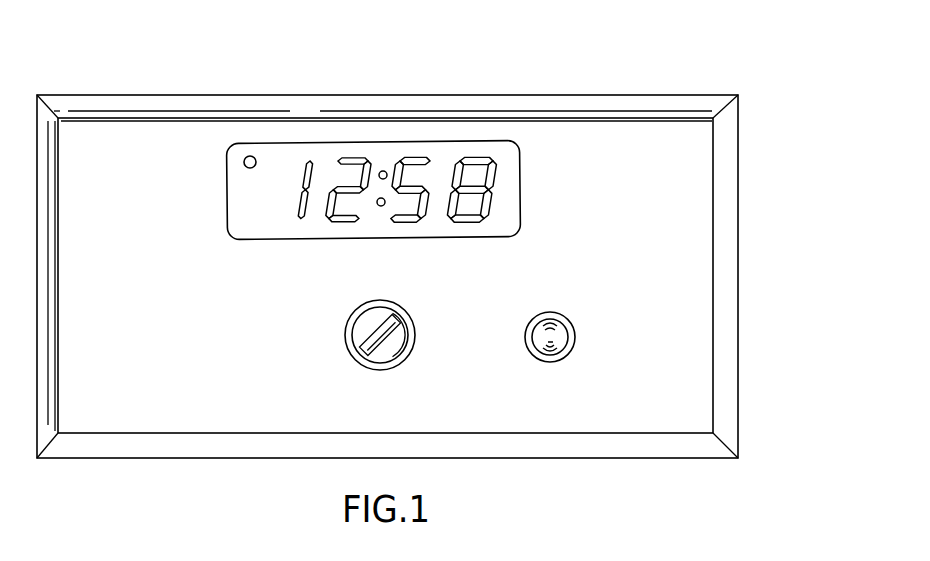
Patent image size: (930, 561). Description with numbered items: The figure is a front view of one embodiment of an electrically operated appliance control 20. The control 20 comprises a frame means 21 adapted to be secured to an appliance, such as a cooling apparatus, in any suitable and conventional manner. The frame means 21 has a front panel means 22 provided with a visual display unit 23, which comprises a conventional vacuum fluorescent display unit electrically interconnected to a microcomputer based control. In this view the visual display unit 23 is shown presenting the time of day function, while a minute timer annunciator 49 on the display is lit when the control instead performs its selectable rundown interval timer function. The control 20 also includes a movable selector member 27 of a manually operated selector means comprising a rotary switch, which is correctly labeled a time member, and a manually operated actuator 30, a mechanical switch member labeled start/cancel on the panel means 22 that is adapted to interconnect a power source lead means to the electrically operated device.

The electrically operated appliance control 20 is at (428, 233).
The frame means 21 is at (738, 327).
The front panel means 22 is at (705, 207).
The visual display unit 23 is at (443, 142).
The minute timer annunciator 49 is at (256, 157).
The movable selector member 27 is at (355, 337).
The manually operated actuator 30 is at (563, 333).